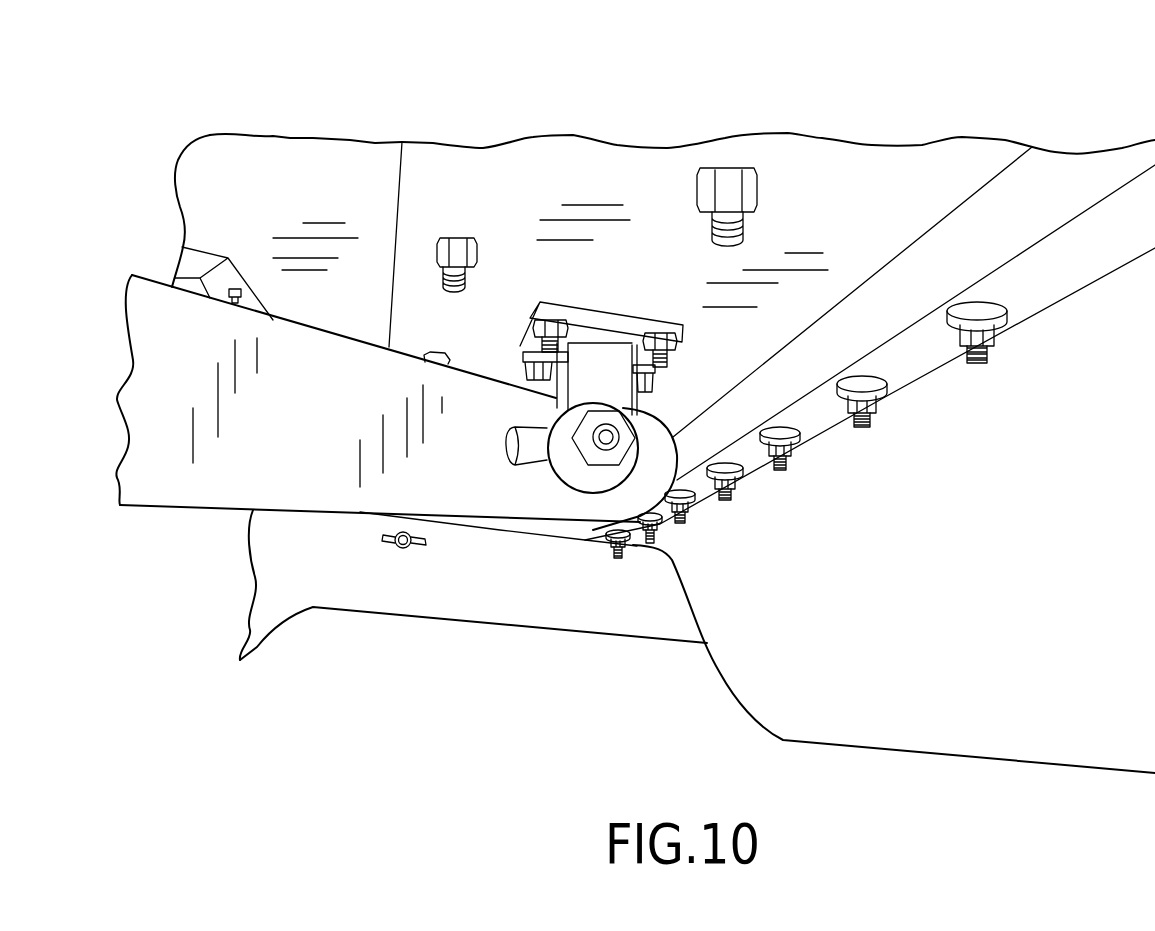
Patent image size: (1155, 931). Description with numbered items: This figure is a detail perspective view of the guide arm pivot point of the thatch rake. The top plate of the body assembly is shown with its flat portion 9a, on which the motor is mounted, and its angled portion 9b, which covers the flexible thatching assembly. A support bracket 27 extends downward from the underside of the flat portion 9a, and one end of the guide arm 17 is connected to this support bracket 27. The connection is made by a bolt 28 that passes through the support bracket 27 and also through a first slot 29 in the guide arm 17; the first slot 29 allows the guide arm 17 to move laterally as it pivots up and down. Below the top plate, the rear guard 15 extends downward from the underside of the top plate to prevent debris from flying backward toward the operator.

The flat portion 9a is at (803, 170).
The angled portion 9b is at (307, 170).
The rear guard 15 is at (932, 716).
The guide arm 17 is at (215, 493).
The support bracket 27 is at (577, 380).
The bolt 28 is at (608, 445).
The first slot 29 is at (513, 465).